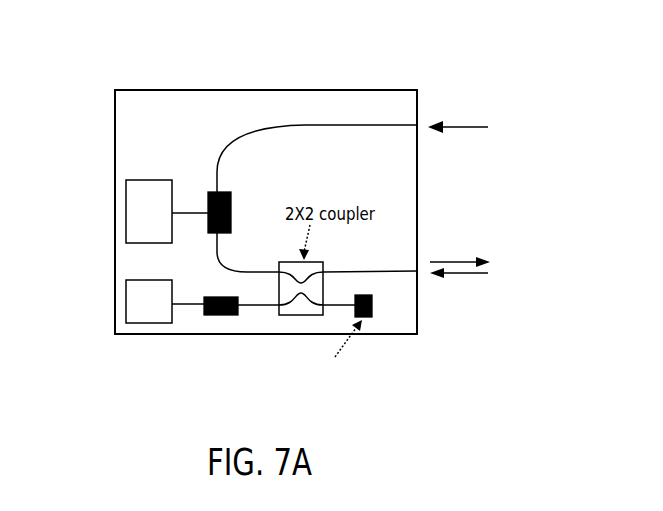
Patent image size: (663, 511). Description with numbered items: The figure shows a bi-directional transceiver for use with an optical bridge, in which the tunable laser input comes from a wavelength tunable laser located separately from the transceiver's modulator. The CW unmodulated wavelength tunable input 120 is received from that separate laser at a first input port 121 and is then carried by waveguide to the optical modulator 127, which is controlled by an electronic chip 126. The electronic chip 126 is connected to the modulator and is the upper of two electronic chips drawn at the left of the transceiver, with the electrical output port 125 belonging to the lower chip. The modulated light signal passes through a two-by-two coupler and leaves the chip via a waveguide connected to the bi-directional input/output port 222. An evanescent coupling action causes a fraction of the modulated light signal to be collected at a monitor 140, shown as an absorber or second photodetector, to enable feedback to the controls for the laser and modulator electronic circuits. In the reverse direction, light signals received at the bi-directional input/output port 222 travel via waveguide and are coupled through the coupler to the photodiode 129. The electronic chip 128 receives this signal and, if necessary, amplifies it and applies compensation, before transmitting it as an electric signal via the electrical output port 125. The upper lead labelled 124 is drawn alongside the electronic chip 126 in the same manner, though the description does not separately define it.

The CW unmodulated wavelength tunable input 120 is at (305, 125).
The first input port 121 is at (485, 136).
The first photodetector leader 124 is at (120, 211).
The electrical output port 125 is at (121, 301).
The electronic chip 126 is at (149, 211).
The optical modulator 127 is at (208, 205).
The electronic chip 128 is at (149, 301).
The photodiode 129 is at (222, 315).
The monitor 140 is at (415, 341).
The bi-directional input/output port 222 is at (492, 271).